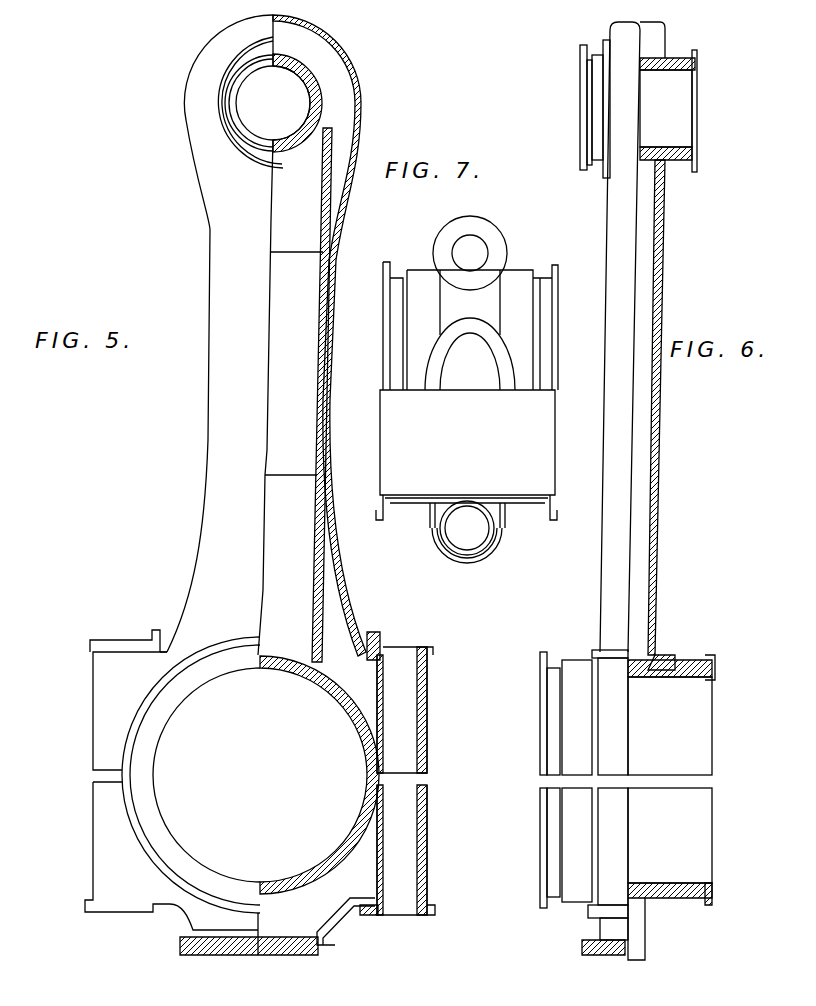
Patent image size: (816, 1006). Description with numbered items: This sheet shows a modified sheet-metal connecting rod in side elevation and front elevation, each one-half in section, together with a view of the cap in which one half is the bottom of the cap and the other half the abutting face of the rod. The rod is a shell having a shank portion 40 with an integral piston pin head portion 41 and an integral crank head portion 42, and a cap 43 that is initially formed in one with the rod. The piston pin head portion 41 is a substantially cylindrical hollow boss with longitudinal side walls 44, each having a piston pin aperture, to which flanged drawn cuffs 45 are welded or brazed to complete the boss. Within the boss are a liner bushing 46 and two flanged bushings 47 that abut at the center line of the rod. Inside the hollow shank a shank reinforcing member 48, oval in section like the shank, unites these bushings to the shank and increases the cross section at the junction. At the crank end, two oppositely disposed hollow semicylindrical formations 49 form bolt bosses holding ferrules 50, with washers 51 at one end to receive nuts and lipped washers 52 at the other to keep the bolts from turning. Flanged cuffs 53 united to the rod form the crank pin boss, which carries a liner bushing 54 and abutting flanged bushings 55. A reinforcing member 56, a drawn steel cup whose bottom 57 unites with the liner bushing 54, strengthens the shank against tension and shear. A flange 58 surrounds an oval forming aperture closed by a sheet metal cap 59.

In FIG. 5, the shank portion 40 is at (249, 338).
In FIG. 5, the piston pin head portion 41 is at (250, 95).
In FIG. 6, the piston pin head portion 41 is at (621, 337).
In FIG. 5, the crank head portion 42 is at (178, 644).
In FIG. 5, the cap 43 is at (171, 868).
In FIG. 6, the longitudinal side walls 44 is at (668, 38).
In FIG. 5, the flanged drawn cuffs 45 is at (212, 62).
In FIG. 6, the flanged drawn cuffs 45 is at (600, 60).
In FIG. 6, the liner bushing 46 is at (696, 70).
In FIG. 5, the flanged bushings 47 is at (273, 103).
In FIG. 6, the flanged bushings 47 is at (666, 370).
In FIG. 5, the shank reinforcing member 48 is at (297, 213).
In FIG. 5, the hollow semicylindrical formations 49 is at (130, 711).
In FIG. 7, the hollow semicylindrical formations 49 is at (488, 535).
In FIG. 6, the hollow semicylindrical formations 49 is at (609, 795).
In FIG. 5, the ferrules 50 is at (406, 781).
In FIG. 7, the ferrules 50 is at (467, 528).
In FIG. 5, the washers 51 is at (118, 904).
In FIG. 5, the lipped washers 52 is at (158, 636).
In FIG. 5, the flanged cuffs 53 is at (238, 648).
In FIG. 6, the flanged cuffs 53 is at (680, 660).
In FIG. 5, the liner bushing 54 is at (330, 685).
In FIG. 6, the liner bushing 54 is at (690, 900).
In FIG. 5, the flanged bushings 55 is at (195, 775).
In FIG. 6, the flanged bushings 55 is at (540, 745).
In FIG. 5, the reinforcing member 56 is at (319, 335).
In FIG. 5, the bottom 57 is at (282, 660).
In FIG. 5, the flange 58 is at (340, 935).
In FIG. 6, the flange 58 is at (585, 948).
In FIG. 5, the sheet metal cap 59 is at (205, 950).